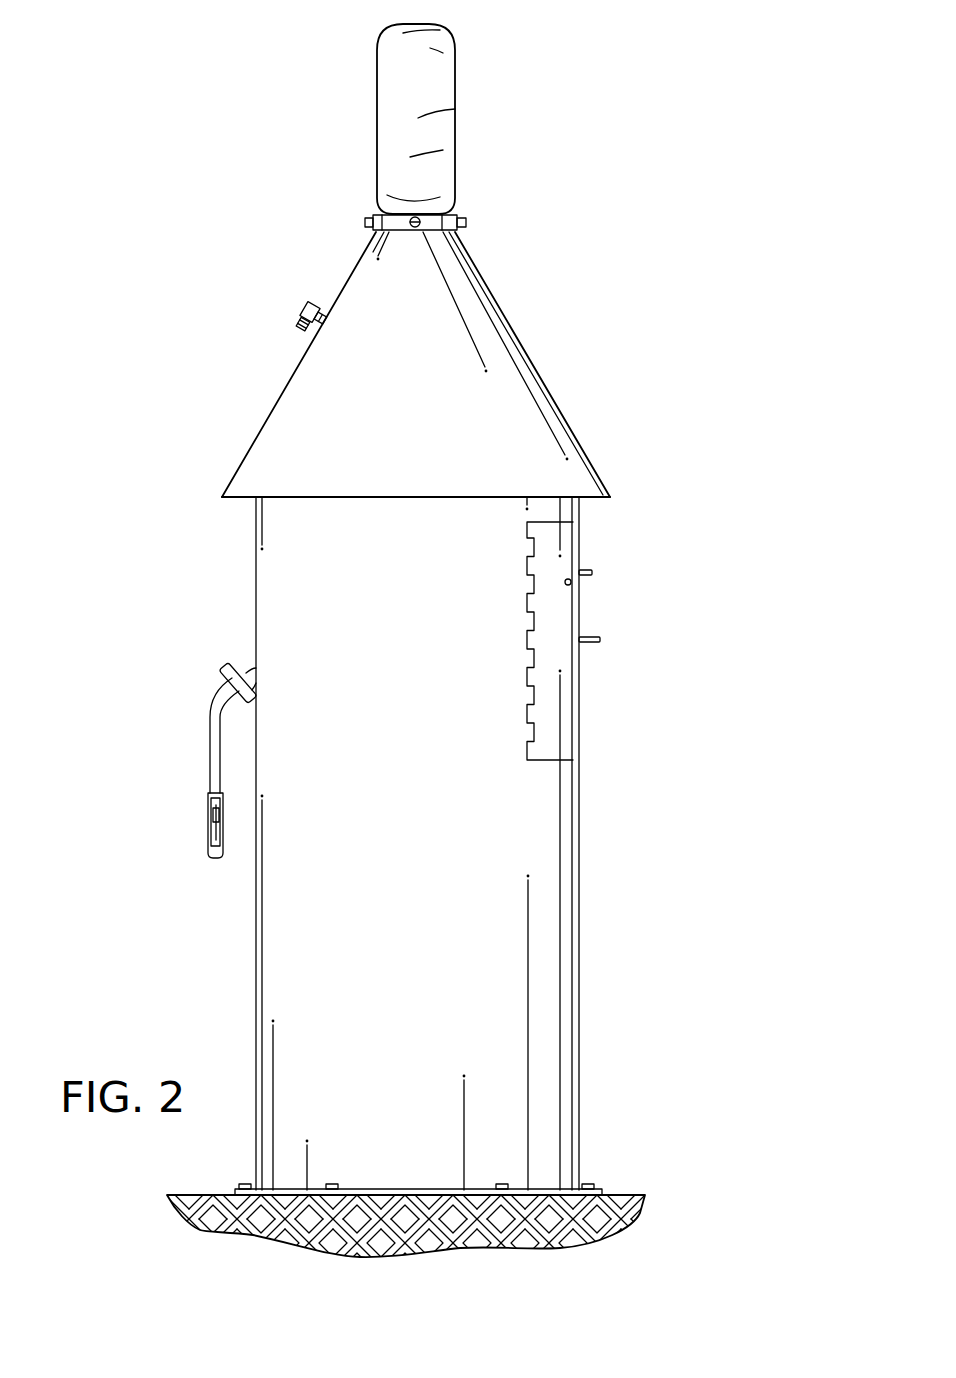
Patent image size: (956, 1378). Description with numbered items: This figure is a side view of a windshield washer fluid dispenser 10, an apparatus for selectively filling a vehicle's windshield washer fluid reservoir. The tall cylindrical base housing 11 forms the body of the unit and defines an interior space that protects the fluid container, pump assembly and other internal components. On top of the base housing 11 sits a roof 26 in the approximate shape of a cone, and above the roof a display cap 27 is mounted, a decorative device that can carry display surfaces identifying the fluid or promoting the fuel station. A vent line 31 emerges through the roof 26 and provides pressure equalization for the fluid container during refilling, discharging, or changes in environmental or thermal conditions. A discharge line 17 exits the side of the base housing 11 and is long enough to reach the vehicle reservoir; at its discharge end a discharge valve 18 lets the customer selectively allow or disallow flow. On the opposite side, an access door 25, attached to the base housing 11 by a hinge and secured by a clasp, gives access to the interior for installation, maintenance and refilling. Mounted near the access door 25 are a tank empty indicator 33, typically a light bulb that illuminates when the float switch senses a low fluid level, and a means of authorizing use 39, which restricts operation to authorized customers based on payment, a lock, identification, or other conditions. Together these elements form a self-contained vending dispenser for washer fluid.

The windshield washer fluid dispenser 10 is at (628, 365).
The base housing 11 is at (505, 1040).
The discharge line 17 is at (216, 745).
The discharge valve 18 is at (211, 847).
The access door 25 is at (553, 713).
The roof 26 is at (452, 322).
The display cap 27 is at (420, 118).
The vent line 31 is at (296, 310).
The tank empty indicator 33 is at (573, 582).
The means of authorizing use 39 is at (585, 571).